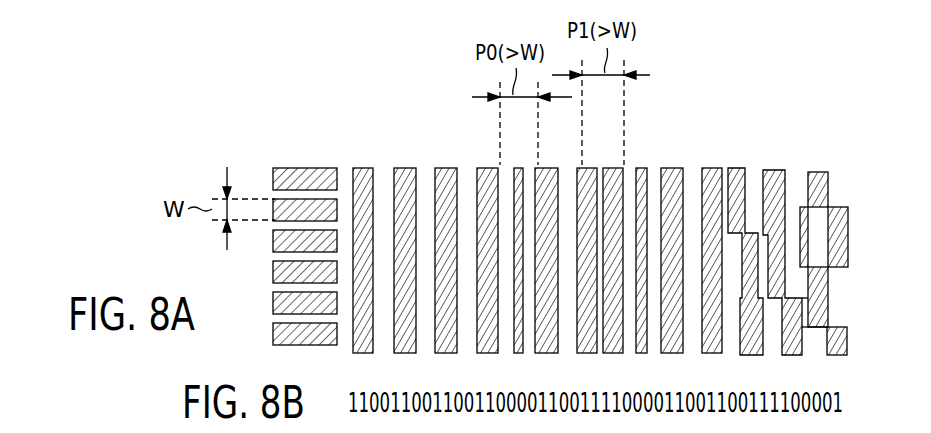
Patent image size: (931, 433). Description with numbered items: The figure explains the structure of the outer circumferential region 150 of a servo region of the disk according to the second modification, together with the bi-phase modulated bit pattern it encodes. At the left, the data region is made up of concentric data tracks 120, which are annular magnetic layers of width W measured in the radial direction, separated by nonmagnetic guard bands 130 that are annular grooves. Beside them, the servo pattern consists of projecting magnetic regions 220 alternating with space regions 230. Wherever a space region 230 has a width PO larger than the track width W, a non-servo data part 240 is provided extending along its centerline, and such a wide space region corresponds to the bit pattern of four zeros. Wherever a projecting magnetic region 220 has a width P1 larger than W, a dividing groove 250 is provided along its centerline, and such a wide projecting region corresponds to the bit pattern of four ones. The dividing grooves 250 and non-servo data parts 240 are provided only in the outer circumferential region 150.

The data track 120 is at (283, 168).
The guard band 130 is at (322, 197).
The outer circumferential region 150 is at (423, 108).
The projecting magnetic region 220 is at (366, 167).
The space region 230 is at (386, 188).
The non-servo data part 240 is at (517, 187).
The dividing groove 250 is at (602, 175).